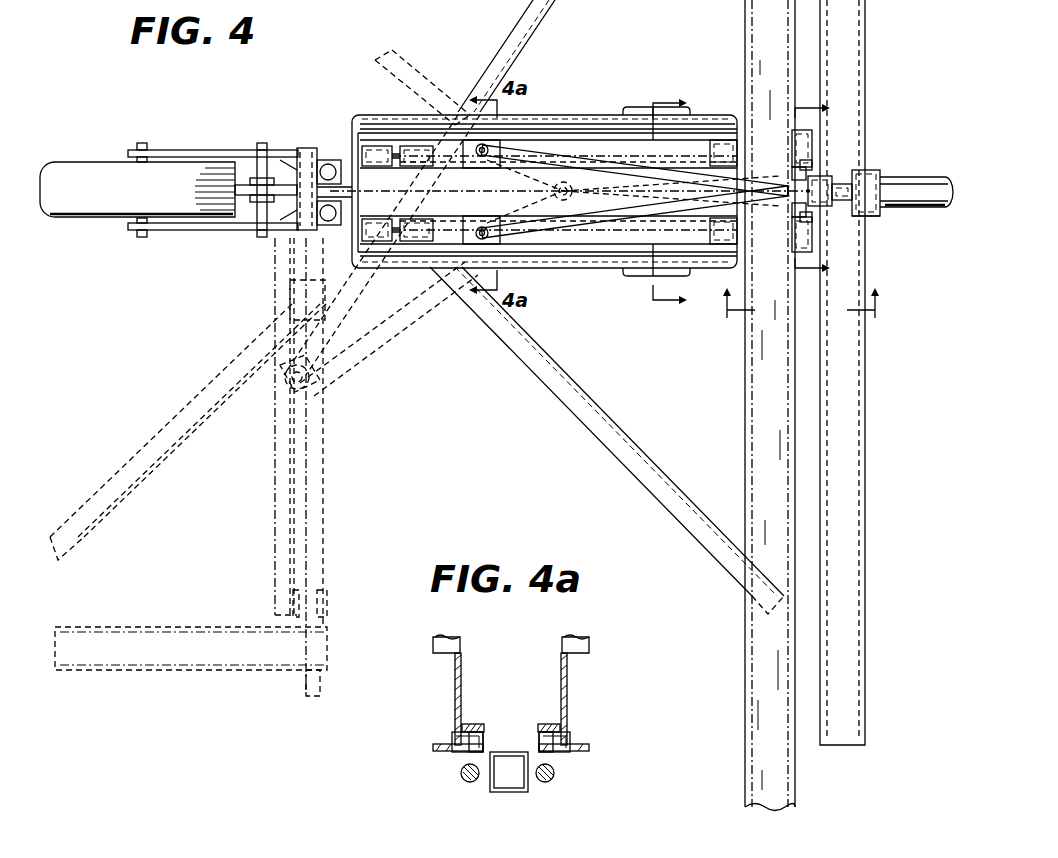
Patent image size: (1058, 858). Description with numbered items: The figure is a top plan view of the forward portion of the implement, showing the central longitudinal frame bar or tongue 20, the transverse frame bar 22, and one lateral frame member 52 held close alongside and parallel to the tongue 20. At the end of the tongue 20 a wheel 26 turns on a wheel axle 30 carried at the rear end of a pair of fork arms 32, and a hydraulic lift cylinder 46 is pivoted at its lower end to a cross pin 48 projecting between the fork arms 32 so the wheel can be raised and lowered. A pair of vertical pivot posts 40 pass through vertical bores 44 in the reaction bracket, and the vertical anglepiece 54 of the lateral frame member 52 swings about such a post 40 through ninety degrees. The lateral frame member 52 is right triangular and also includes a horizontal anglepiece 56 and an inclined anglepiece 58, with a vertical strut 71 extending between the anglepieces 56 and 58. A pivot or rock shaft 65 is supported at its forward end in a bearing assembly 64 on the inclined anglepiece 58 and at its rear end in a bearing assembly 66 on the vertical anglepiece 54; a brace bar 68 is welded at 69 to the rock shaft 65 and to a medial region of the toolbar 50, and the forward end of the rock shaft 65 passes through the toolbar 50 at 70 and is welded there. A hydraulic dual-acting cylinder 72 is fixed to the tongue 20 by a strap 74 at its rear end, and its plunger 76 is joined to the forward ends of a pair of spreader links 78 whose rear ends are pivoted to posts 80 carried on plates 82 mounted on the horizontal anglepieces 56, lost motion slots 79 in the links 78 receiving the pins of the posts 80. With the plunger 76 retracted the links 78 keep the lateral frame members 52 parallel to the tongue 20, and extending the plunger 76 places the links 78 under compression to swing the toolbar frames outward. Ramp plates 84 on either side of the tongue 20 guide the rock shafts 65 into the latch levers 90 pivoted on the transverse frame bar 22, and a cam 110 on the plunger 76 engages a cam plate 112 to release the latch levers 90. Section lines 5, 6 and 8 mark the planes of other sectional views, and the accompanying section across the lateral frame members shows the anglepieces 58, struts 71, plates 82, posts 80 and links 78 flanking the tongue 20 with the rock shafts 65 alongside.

In FIG. 4, the frame bar or tongue 20 is at (950, 178).
In FIG. 4a, the frame bar or tongue 20 is at (512, 792).
In FIG. 4, the transverse frame bar 22 is at (858, 436).
In FIG. 4, the wheel 26 is at (122, 160).
In FIG. 4, the wheel axle 30 is at (143, 143).
In FIG. 4, the fork arms 32 is at (205, 147).
In FIG. 4, the vertical pivot posts 40 is at (307, 148).
In FIG. 4, the vertical bores 44 is at (331, 163).
In FIG. 4, the hydraulic lift cylinder 46 is at (250, 197).
In FIG. 4, the cross pin 48 is at (260, 143).
In FIG. 4, the toolbar 50 is at (745, 420).
In FIG. 4, the lateral frame member 52 is at (575, 115).
In FIG. 4, the vertical anglepiece 54 is at (370, 133).
In FIG. 4a, the horizontal anglepiece 56 is at (452, 735).
In FIG. 4, the inclined anglepiece 58 is at (275, 438).
In FIG. 4a, the inclined anglepiece 58 is at (437, 653).
In FIG. 4, the bearing assembly 64 is at (718, 140).
In FIG. 4, the pivot or rock shaft 65 is at (640, 140).
In FIG. 4a, the pivot or rock shaft 65 is at (461, 774).
In FIG. 4, the bearing assembly 66 is at (378, 166).
In FIG. 4, the brace bar 68 is at (162, 425).
In FIG. 4, the weld 69 is at (445, 140).
In FIG. 4, the shaft passage through toolbar 70 is at (810, 160).
In FIG. 4, the vertical strut 71 is at (548, 133).
In FIG. 4a, the vertical strut 71 is at (455, 698).
In FIG. 4, the hydraulic dual-acting cylinder 72 is at (910, 207).
In FIG. 4, the strap 74 is at (868, 218).
In FIG. 4, the plunger 76 is at (858, 174).
In FIG. 4, the spreader links 78 is at (405, 75).
In FIG. 4a, the spreader links 78 is at (478, 724).
In FIG. 4, the lost motion slots 79 is at (530, 158).
In FIG. 4a, the posts 80 is at (483, 742).
In FIG. 4, the plates 82 is at (475, 166).
In FIG. 4a, the plates 82 is at (435, 750).
In FIG. 4, the ramp plates 84 is at (655, 107).
In FIG. 4, the latch levers 90 is at (796, 130).
In FIG. 4, the cam 110 is at (820, 176).
In FIG. 4, the cam plate 112 is at (795, 167).
In FIG. 4, the section line 5 is at (821, 188).
In FIG. 4, the section line 6 is at (800, 313).
In FIG. 4, the section line 8 is at (678, 196).